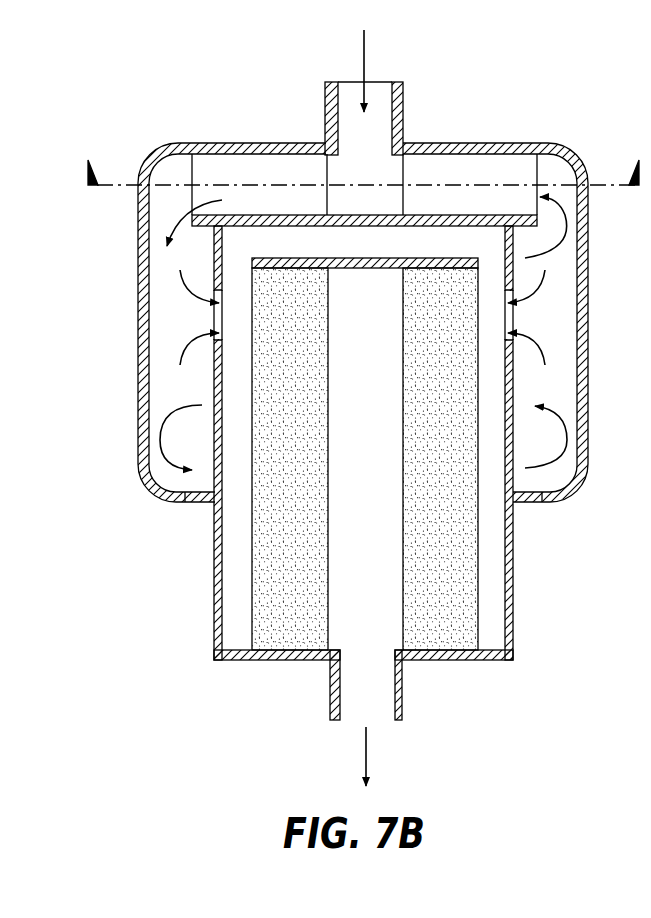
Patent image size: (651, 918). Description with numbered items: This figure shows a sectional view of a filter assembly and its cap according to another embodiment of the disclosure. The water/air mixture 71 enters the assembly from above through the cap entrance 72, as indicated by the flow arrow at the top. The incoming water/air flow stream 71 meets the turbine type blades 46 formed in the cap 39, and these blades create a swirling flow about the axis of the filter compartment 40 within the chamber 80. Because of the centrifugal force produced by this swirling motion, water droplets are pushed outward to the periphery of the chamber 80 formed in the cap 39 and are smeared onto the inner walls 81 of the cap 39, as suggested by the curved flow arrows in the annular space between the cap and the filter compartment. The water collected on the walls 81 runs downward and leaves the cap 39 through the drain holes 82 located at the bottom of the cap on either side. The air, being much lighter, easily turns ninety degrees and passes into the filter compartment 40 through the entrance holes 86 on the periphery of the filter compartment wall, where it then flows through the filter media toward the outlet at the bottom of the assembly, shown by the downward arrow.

The cap 39 is at (138, 398).
The cap entrance 72 is at (379, 147).
The water/air mixture 71 is at (365, 48).
The turbine type blades 46 is at (312, 194).
The filter compartment 40 is at (383, 251).
The entrance holes 86 is at (510, 318).
The inner walls 81 is at (150, 330).
The chamber 80 is at (553, 322).
The drain holes 82 is at (203, 497).